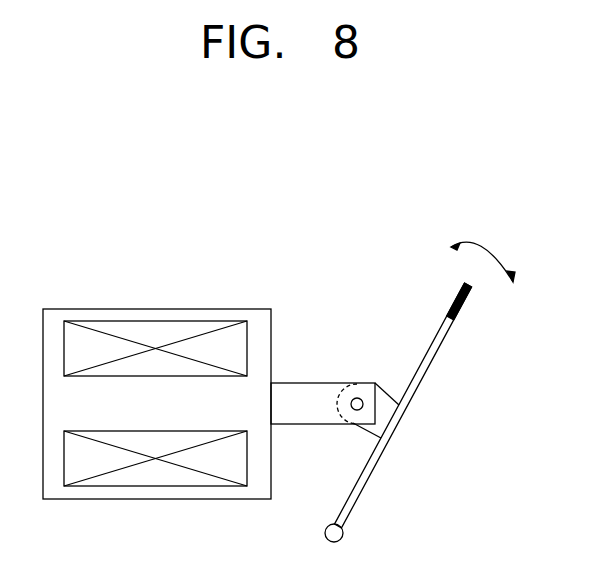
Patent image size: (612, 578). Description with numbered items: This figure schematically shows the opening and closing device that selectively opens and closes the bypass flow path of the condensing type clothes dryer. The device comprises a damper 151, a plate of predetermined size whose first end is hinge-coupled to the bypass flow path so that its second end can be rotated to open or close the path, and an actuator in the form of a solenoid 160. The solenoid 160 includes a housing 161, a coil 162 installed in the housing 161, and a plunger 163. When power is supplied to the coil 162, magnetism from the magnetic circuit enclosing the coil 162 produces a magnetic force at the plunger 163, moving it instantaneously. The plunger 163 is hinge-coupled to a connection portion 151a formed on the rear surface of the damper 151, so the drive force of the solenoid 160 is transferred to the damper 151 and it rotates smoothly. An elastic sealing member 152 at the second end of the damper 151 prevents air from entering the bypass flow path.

The solenoid 160 is at (209, 341).
The housing 161 is at (104, 309).
The coil 162 is at (182, 330).
The plunger 163 is at (312, 392).
The damper 151 is at (426, 392).
The connection portion 151a is at (386, 392).
The sealing member 152 is at (465, 303).